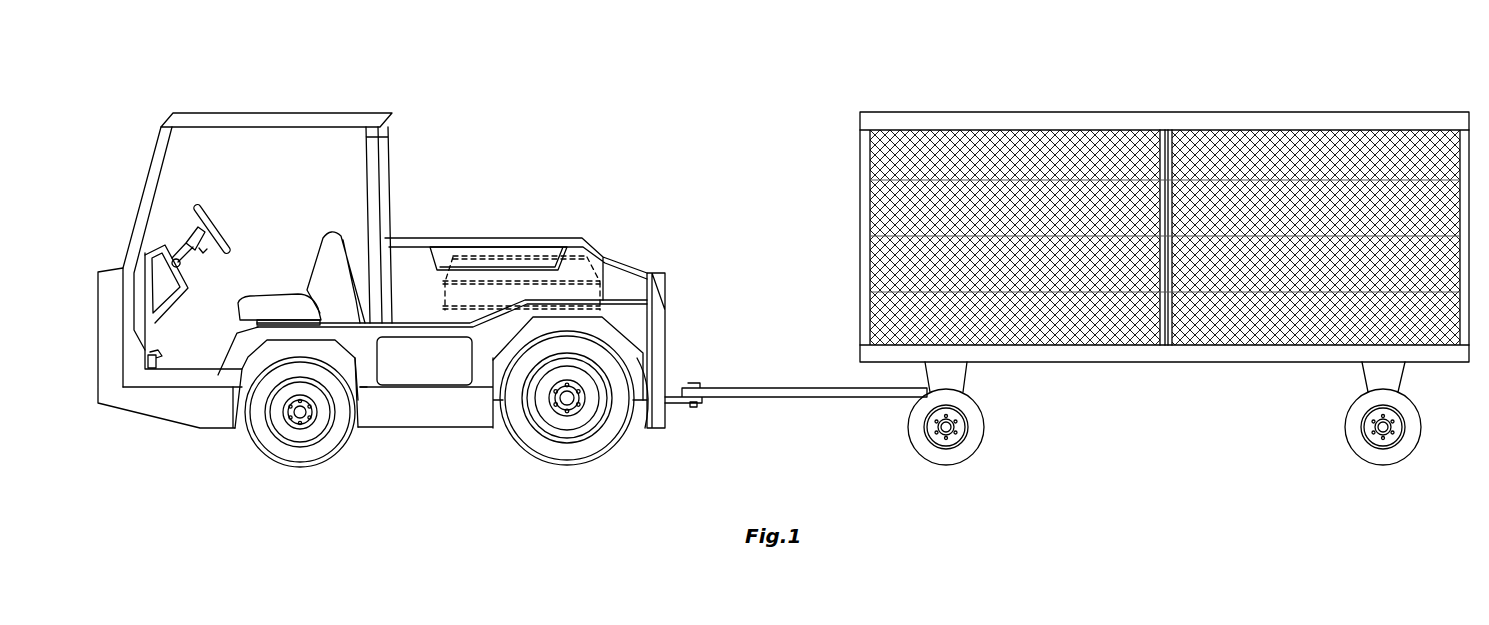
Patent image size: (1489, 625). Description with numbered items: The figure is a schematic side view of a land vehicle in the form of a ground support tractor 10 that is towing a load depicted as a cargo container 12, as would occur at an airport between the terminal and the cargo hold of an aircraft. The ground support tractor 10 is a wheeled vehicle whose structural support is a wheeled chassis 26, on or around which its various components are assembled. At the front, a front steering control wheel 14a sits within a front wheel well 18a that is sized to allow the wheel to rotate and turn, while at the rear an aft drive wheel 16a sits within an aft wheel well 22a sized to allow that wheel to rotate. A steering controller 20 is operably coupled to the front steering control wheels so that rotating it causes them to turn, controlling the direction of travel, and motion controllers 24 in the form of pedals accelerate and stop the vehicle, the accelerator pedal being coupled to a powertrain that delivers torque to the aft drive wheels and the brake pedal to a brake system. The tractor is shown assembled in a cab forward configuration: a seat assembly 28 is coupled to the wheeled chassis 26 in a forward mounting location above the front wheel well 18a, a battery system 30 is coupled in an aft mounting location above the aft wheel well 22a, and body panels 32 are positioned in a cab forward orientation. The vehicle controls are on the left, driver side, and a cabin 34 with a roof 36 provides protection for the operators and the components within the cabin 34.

The ground support tractor 10 is at (480, 144).
The cargo container 12 is at (1172, 112).
The front steering control wheel 14a is at (301, 464).
The aft drive wheel 16a is at (566, 467).
The front wheel well 18a is at (358, 408).
The steering controller 20 is at (218, 229).
The aft wheel well 22a is at (634, 400).
The motion controllers 24 is at (158, 361).
The wheeled chassis 26 is at (276, 467).
The seat assembly 28 is at (352, 226).
The battery system 30 is at (495, 252).
The body panels 32 is at (627, 318).
The cabin 34 is at (394, 160).
The roof 36 is at (303, 113).